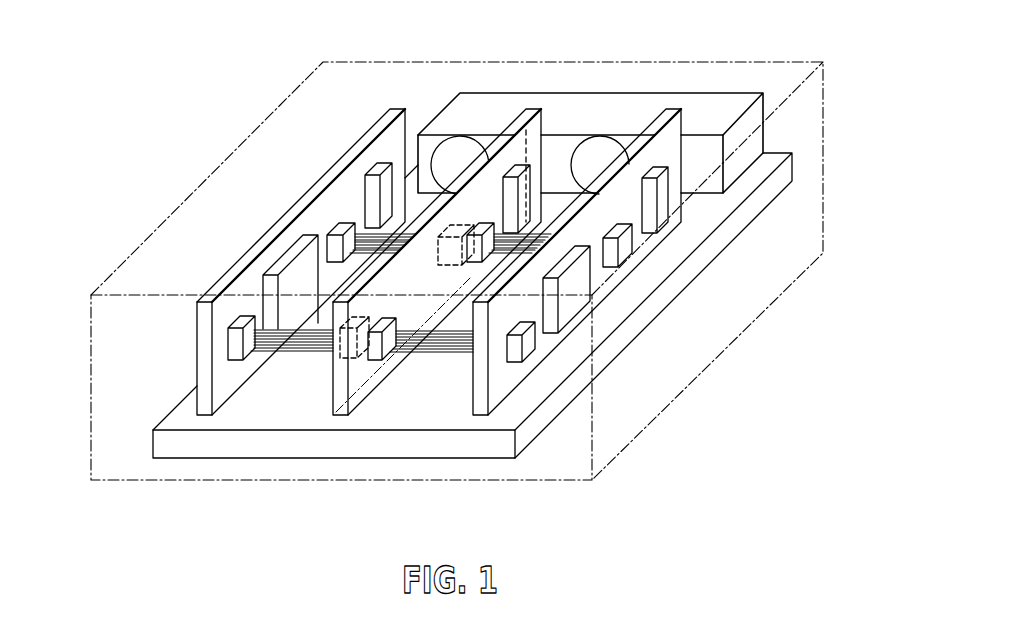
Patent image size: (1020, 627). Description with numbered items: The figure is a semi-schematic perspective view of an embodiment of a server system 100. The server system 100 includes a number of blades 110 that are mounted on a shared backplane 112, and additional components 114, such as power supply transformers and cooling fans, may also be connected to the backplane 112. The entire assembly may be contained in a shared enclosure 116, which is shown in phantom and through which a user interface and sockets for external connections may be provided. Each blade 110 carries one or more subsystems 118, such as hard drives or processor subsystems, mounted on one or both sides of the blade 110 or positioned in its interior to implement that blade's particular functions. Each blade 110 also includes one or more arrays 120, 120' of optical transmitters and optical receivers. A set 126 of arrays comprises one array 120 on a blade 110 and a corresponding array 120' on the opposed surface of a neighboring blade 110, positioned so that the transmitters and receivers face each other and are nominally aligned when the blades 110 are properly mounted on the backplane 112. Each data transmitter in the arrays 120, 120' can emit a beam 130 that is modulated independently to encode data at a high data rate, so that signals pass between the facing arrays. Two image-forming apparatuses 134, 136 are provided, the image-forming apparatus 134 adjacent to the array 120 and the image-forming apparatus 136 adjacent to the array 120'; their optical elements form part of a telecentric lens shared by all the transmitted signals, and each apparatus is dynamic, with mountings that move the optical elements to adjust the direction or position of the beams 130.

The server system 100 is at (250, 75).
The blade 110 is at (225, 282).
The shared backplane 112 is at (628, 326).
The additional components 114 is at (610, 110).
The shared enclosure 116 is at (757, 319).
The subsystem 118 is at (300, 280).
The array 120 is at (411, 318).
The array 120' is at (415, 276).
The set of arrays 126 is at (320, 218).
The beam 130 is at (290, 350).
The image-forming apparatus 134 is at (247, 348).
The image-forming apparatus 136 is at (342, 358).